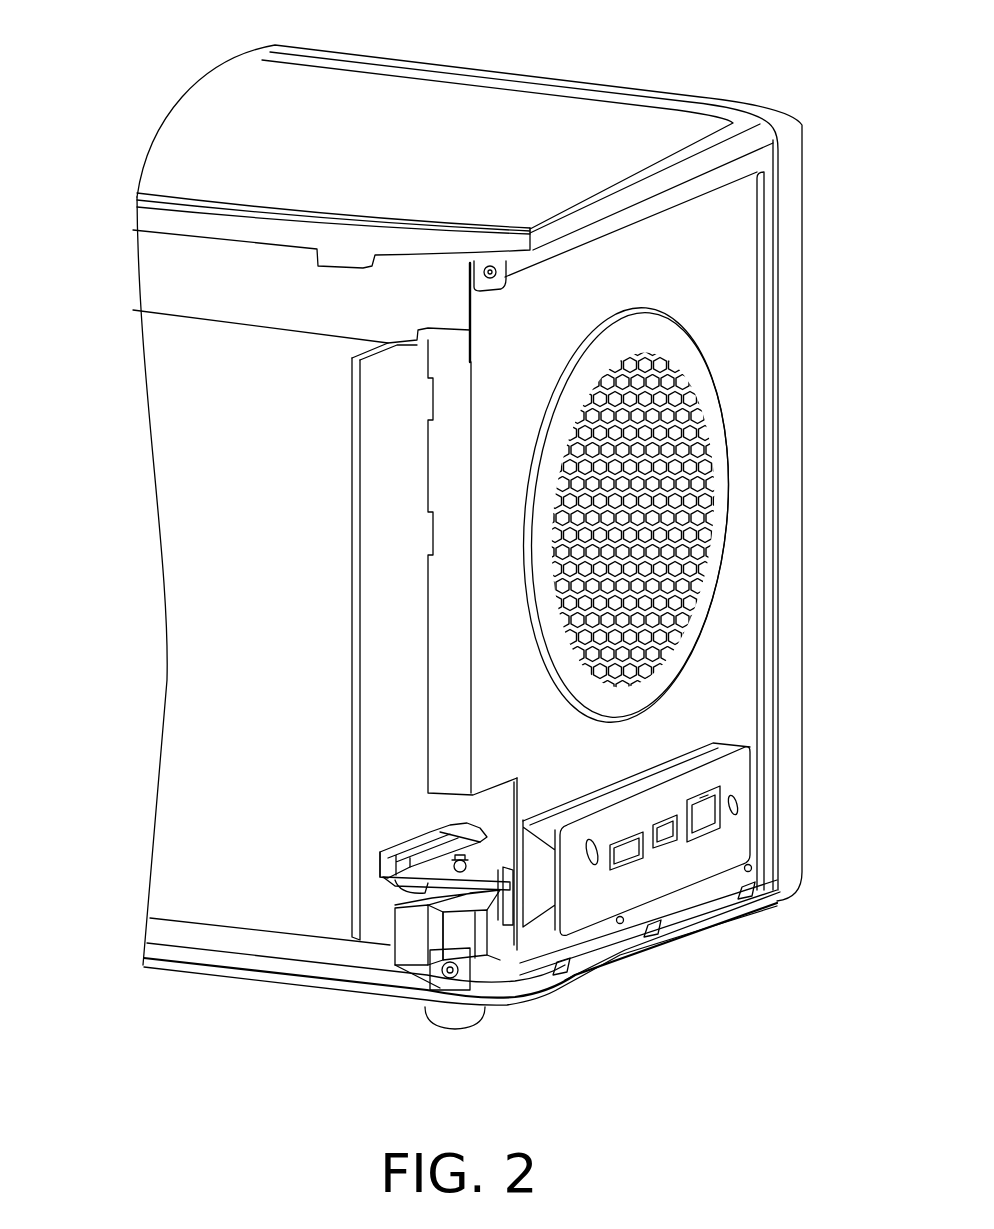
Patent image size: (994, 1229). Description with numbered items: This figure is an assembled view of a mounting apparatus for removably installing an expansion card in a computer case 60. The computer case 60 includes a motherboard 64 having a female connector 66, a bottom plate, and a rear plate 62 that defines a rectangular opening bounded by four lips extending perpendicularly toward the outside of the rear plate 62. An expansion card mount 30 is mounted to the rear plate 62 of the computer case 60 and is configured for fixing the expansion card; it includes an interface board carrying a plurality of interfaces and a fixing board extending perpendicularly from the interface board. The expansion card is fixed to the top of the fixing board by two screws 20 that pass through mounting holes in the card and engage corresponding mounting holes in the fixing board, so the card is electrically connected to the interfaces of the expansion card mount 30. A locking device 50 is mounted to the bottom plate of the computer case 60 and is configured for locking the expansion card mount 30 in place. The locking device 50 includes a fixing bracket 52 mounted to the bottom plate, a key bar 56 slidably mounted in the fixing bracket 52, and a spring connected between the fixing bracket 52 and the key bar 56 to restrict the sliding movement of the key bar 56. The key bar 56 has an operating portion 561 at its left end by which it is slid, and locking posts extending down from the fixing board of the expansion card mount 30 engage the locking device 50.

The screws 20 is at (430, 912).
The expansion card mount 30 is at (670, 873).
The locking device 50 is at (413, 942).
The fixing bracket 52 is at (495, 920).
The key bar 56 is at (462, 935).
The operating portion 561 is at (430, 940).
The computer case 60 is at (470, 120).
The rear plate 62 is at (703, 270).
The motherboard 64 is at (385, 613).
The female connector 66 is at (393, 858).